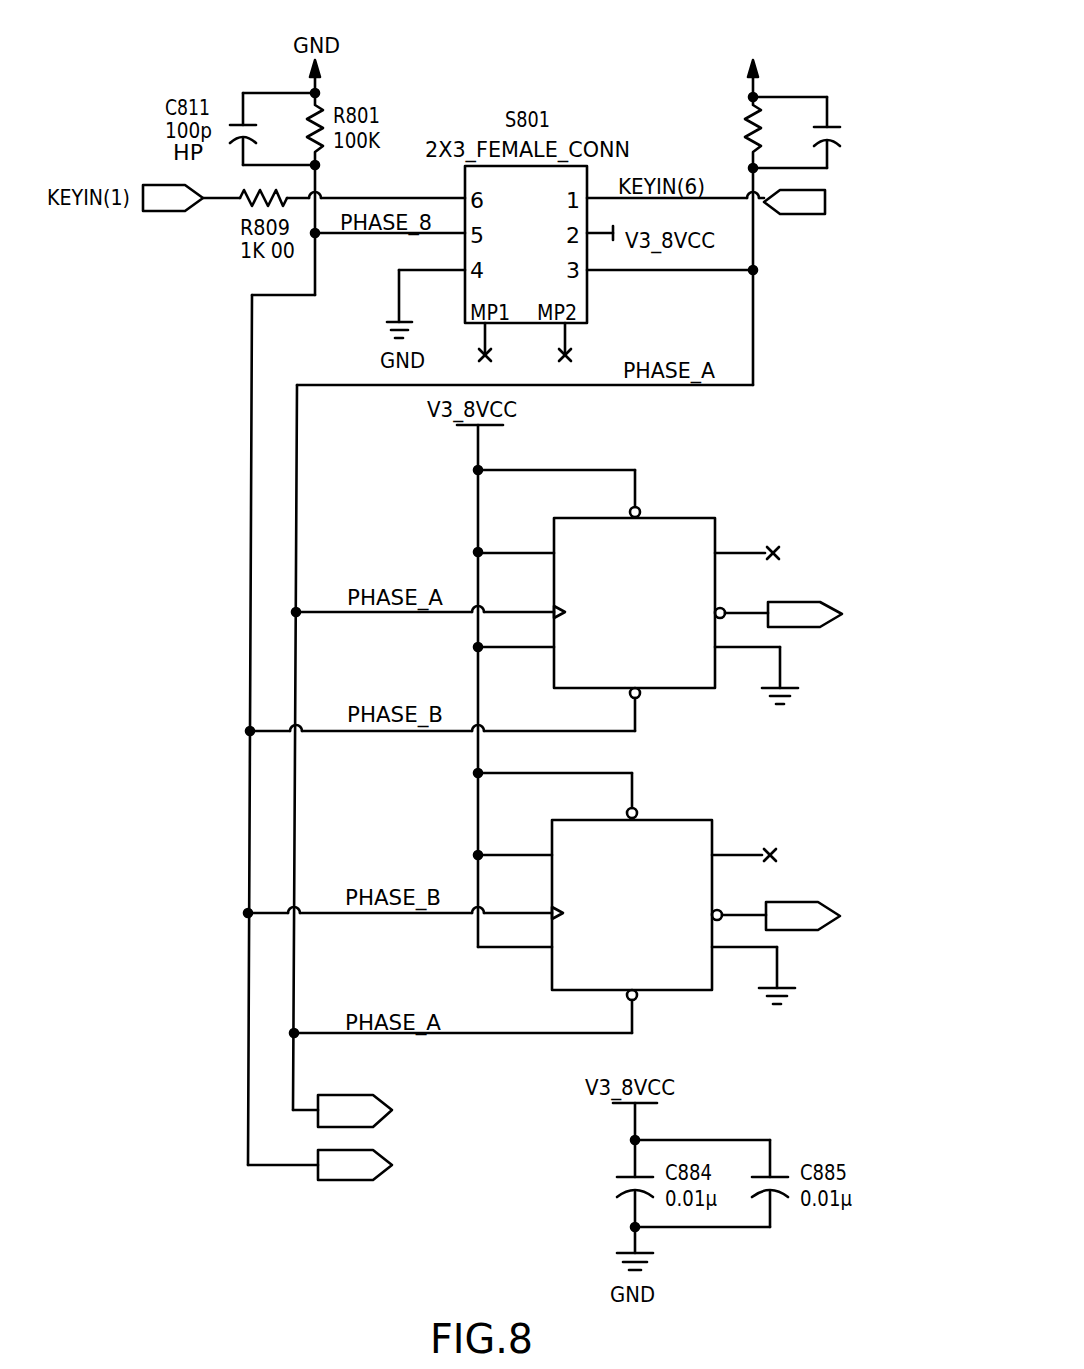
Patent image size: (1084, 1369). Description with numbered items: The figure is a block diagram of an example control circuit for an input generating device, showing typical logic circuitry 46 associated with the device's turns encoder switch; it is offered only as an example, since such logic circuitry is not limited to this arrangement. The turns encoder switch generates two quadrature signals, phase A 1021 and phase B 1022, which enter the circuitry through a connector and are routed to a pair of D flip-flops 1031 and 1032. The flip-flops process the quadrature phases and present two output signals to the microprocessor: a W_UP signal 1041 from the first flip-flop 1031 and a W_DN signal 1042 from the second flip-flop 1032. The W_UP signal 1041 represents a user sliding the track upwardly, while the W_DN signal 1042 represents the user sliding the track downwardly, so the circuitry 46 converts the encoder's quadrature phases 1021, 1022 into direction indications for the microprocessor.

The logic circuitry 46 is at (830, 70).
The D flip-flop 1031 is at (688, 518).
The D flip-flop 1032 is at (687, 820).
The W_UP signal 1041 is at (877, 637).
The W_DN signal 1042 is at (873, 935).
The phase A signal 1021 is at (457, 1090).
The phase B signal 1022 is at (450, 1185).